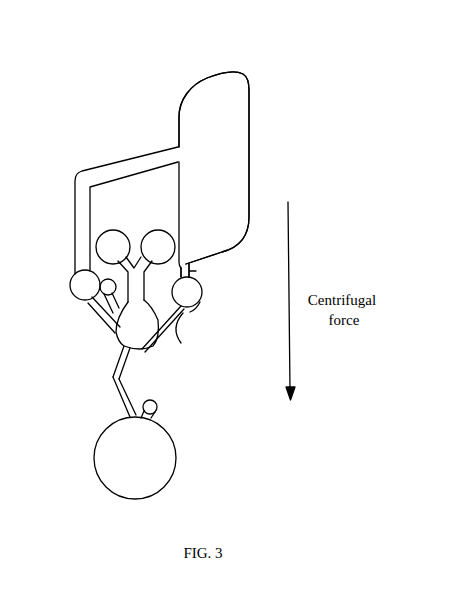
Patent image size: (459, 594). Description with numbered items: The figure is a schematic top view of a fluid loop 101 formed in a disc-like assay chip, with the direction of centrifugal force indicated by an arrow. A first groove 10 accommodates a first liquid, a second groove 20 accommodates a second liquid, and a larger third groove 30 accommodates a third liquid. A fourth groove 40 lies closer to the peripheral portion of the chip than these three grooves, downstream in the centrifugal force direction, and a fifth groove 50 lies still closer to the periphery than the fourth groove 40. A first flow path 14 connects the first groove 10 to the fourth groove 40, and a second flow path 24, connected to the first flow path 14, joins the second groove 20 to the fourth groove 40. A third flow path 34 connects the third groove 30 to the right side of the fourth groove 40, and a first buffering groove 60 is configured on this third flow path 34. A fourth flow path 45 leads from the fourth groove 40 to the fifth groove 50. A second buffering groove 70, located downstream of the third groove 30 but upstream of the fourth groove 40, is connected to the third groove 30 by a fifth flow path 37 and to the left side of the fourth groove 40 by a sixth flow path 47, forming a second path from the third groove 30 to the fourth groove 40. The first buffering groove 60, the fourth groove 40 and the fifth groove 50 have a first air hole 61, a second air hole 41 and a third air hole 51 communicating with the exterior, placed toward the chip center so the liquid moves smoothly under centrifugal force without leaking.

The fluid loop 101 is at (266, 89).
The third groove 30 is at (218, 100).
The fifth flow path 37 is at (93, 178).
The second buffering groove 70 is at (71, 287).
The second groove 20 is at (114, 242).
The first groove 10 is at (160, 240).
The second flow path 24 is at (130, 278).
The second air hole 41 is at (93, 309).
The fourth groove 40 is at (157, 338).
The sixth flow path 47 is at (107, 325).
The fourth flow path 45 is at (127, 391).
The third air hole 51 is at (158, 406).
The fifth groove 50 is at (160, 460).
The first air hole 61 is at (194, 263).
The third flow path 34 is at (197, 273).
The first flow path 14 is at (196, 291).
The first buffering groove 60 is at (206, 299).